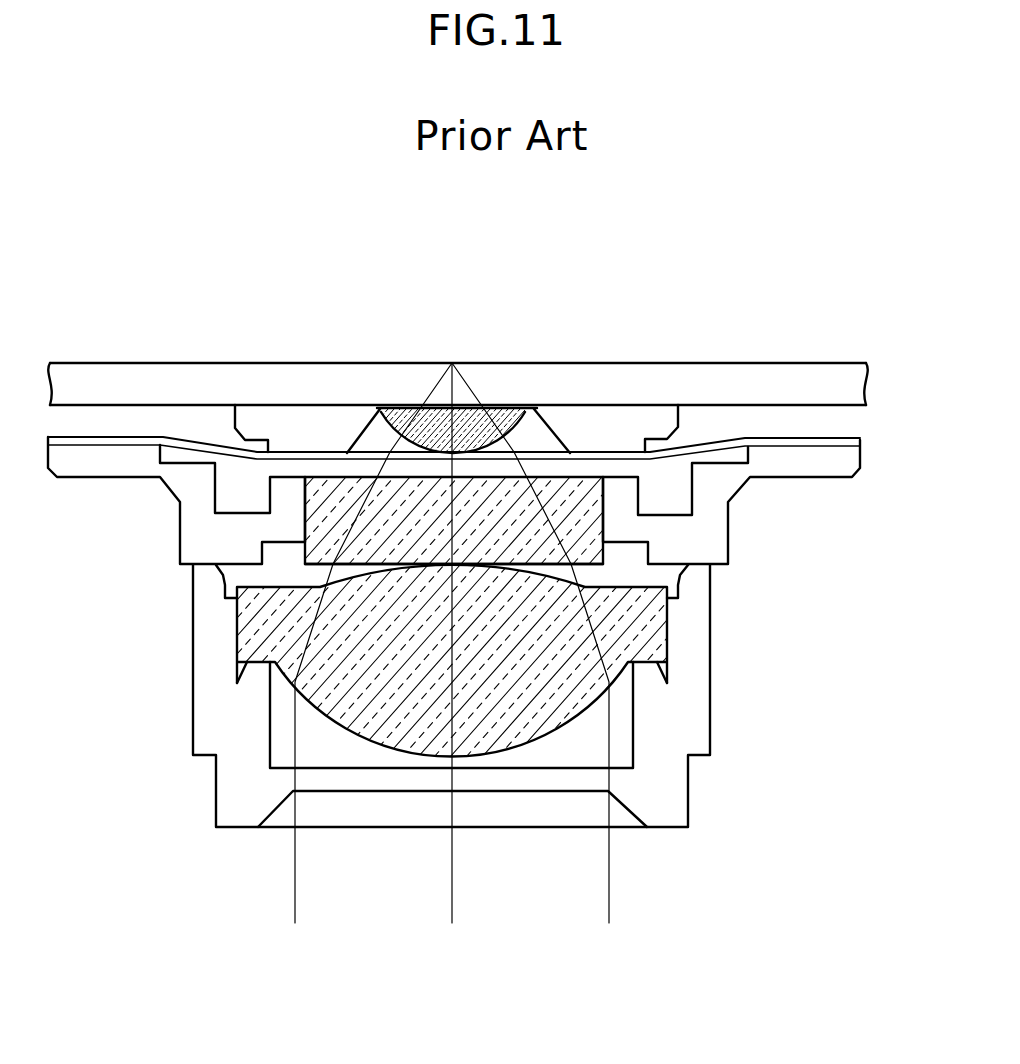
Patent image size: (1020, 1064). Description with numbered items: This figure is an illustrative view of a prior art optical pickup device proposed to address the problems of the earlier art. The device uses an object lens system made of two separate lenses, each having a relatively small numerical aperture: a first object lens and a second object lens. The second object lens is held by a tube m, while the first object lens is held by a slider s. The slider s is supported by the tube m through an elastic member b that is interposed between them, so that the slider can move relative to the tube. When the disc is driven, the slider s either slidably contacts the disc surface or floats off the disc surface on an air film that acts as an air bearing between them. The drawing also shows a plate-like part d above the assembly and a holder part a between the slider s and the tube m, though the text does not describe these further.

The substrate plate d is at (827, 383).
The slider s is at (603, 422).
The elastic member b is at (713, 430).
The lens holder frame a is at (731, 510).
The tube m is at (730, 540).